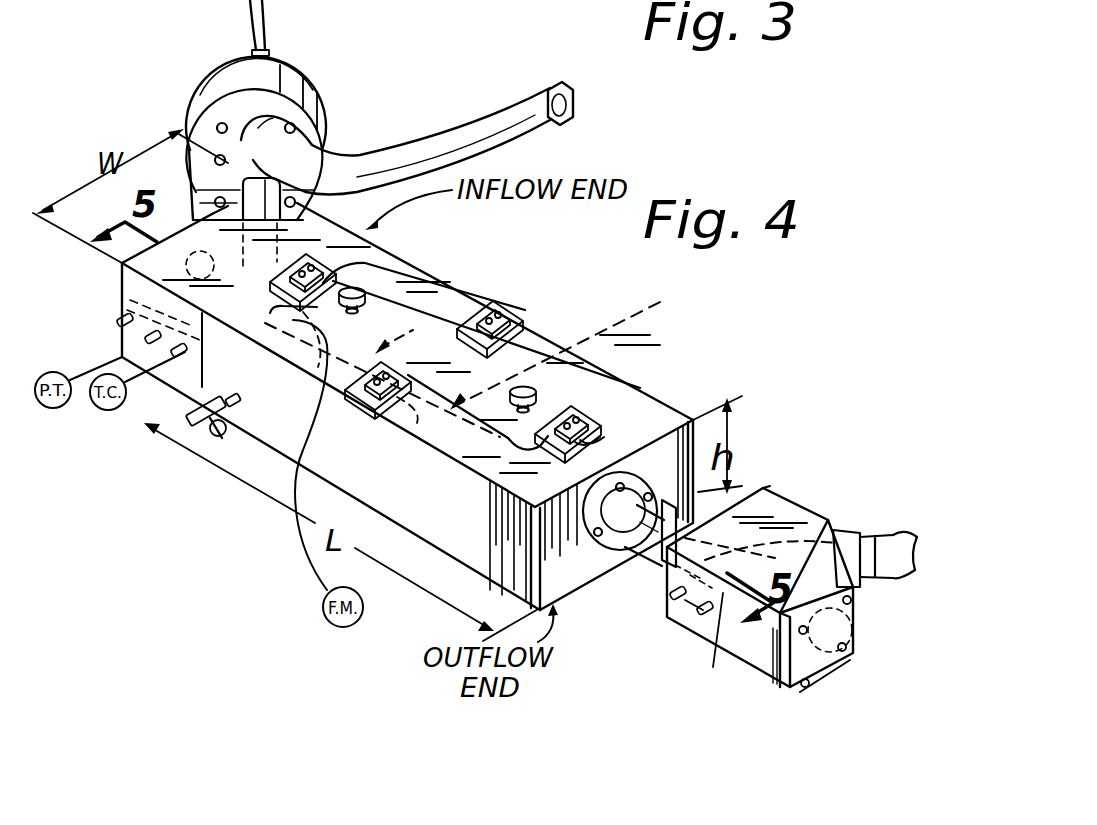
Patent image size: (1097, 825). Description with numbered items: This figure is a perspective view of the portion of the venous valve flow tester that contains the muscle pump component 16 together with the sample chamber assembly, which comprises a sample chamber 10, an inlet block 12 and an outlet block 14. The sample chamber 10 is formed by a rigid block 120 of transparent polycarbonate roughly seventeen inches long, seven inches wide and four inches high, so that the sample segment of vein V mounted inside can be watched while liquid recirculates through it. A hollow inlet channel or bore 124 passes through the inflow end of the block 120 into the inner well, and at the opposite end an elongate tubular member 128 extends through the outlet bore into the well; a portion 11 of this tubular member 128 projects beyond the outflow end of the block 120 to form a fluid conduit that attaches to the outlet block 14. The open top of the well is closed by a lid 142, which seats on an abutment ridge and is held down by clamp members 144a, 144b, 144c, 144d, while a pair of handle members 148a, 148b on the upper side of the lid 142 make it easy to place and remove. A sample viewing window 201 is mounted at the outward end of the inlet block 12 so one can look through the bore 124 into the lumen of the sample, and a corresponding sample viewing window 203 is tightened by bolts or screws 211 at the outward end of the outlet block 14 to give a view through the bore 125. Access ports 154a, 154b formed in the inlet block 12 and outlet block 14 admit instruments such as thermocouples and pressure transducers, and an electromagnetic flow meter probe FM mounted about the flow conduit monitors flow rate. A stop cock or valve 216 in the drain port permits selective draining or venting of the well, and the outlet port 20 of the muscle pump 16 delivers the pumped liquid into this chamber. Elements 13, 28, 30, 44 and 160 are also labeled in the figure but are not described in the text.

The sample chamber 10 is at (616, 362).
The portion of tubular member 11 is at (598, 548).
The inlet block 12 is at (115, 291).
The outlet pipe 13 is at (640, 545).
The outlet block 14 is at (795, 494).
The muscle pump component 16 is at (318, 66).
The outlet port of muscle pump 20 is at (192, 116).
The inlet tube 28 is at (466, 137).
The cable 30 is at (262, 34).
The outlet fitting 44 is at (907, 530).
The rigid block 120 is at (702, 400).
The inlet channel or bore 124 is at (298, 445).
The bore 125 is at (713, 667).
The elongate tubular member 128 is at (491, 355).
The lid 142 is at (455, 292).
The clamp member 144a is at (283, 305).
The clamp member 144b is at (522, 312).
The clamp member 144c is at (592, 432).
The clamp member 144d is at (370, 392).
The handle member 148a is at (364, 290).
The handle member 148b is at (538, 393).
The access port 154a is at (214, 408).
The access port 154b is at (680, 617).
The valve body top 160 is at (765, 490).
The sample viewing window 201 is at (186, 212).
The sample viewing window 203 is at (855, 612).
The bolts or screws 211 is at (812, 635).
The stop cock or valve 216 is at (203, 385).